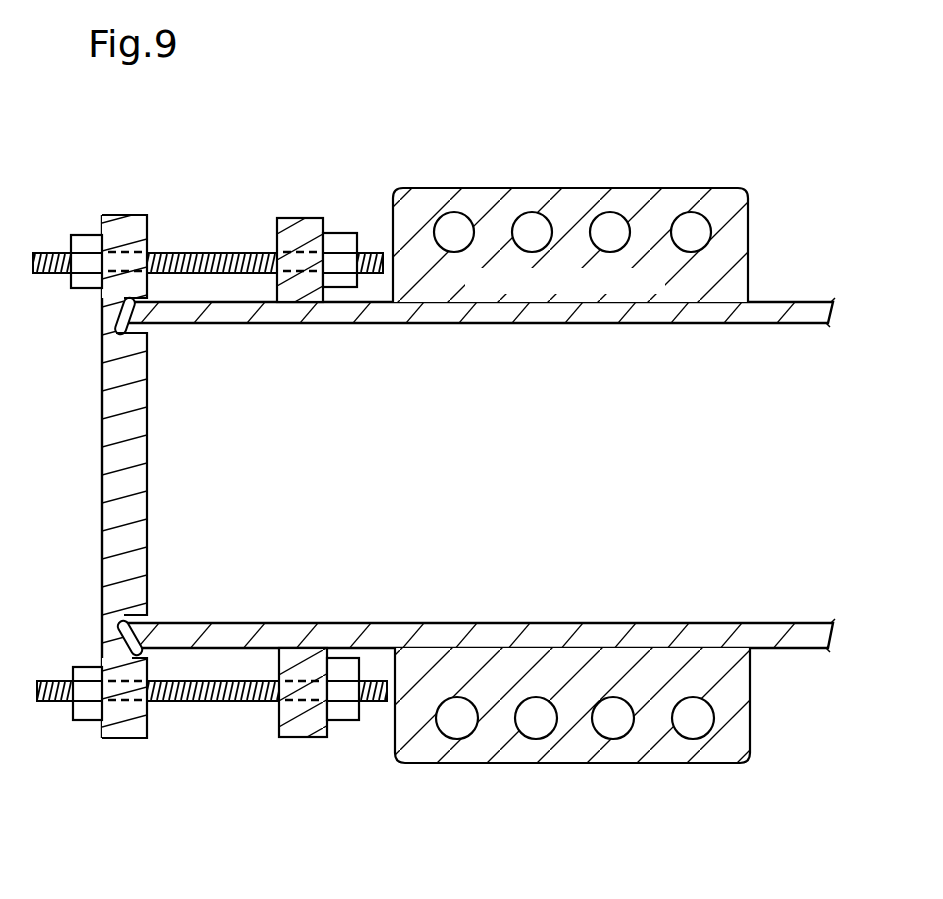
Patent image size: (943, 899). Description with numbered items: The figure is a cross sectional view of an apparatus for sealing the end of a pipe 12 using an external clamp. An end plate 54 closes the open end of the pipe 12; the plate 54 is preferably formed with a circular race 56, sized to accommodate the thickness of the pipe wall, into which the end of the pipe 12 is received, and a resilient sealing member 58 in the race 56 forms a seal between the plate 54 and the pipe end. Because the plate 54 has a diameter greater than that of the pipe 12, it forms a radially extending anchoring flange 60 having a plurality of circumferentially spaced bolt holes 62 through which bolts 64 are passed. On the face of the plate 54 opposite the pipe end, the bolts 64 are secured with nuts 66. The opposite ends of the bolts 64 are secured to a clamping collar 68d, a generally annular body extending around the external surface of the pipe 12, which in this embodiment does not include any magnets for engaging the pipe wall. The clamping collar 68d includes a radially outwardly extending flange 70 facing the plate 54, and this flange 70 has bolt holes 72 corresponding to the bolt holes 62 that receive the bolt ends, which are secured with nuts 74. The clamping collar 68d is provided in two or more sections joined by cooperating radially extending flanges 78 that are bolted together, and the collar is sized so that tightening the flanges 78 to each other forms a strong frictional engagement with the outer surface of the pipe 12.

The pipe 12 is at (755, 316).
The end plate 54 is at (117, 560).
The circular race 56 is at (131, 345).
The resilient sealing member 58 is at (118, 322).
The anchoring flange 60 is at (148, 218).
The bolt holes 62 is at (120, 248).
The bolts 64 is at (186, 686).
The nuts 66 is at (83, 239).
The clamping collar 68d is at (735, 245).
The radially outwardly extending flange 70 is at (292, 219).
The bolt holes 72 is at (305, 245).
The nuts 74 is at (339, 239).
The radially extending flanges 78 is at (589, 218).